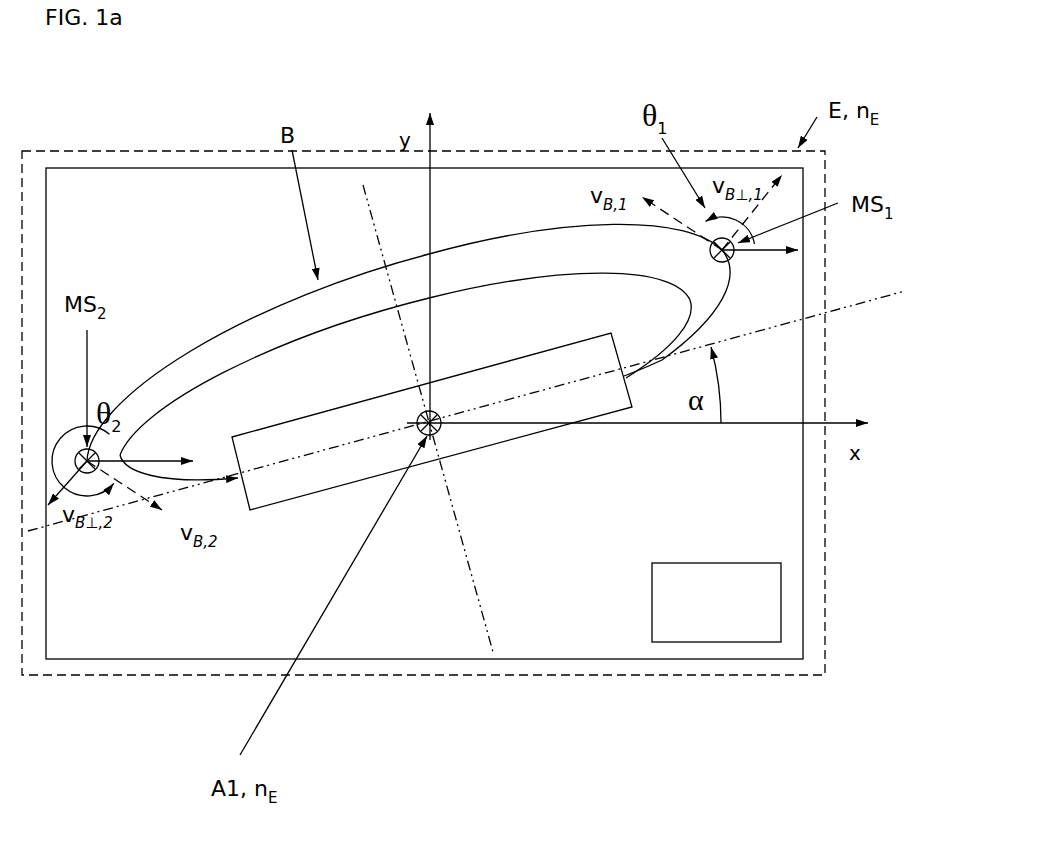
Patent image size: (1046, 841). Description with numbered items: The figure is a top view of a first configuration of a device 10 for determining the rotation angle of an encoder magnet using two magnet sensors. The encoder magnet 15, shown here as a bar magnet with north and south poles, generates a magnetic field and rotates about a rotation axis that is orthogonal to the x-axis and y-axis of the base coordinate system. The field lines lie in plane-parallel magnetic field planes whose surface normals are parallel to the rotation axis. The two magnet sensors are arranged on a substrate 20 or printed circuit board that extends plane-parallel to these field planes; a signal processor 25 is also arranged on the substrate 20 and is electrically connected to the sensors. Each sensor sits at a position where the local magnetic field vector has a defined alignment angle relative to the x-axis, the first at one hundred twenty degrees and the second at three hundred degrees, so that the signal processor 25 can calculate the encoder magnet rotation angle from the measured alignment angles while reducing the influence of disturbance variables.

The device 10 is at (742, 112).
The encoder magnet 15 is at (432, 421).
The substrate 20 is at (556, 620).
The signal processor 25 is at (716, 602).